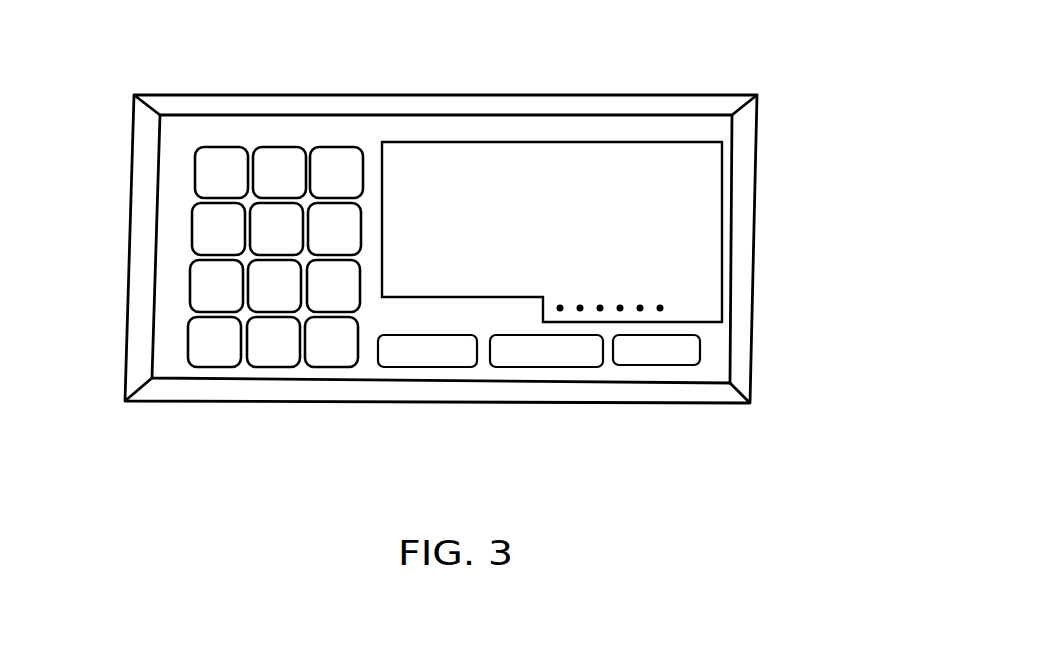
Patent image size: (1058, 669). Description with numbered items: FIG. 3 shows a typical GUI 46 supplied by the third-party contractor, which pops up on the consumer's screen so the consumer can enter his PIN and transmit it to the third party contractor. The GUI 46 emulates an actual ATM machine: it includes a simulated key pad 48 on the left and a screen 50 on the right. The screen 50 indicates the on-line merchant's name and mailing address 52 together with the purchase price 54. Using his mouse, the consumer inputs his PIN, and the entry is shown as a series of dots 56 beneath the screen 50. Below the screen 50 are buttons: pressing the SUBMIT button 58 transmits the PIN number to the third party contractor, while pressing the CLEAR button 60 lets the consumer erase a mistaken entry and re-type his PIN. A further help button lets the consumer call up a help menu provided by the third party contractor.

The GUI 46 is at (738, 62).
The simulated key pad 48 is at (190, 278).
The screen 50 is at (703, 182).
The on-line merchant's name and mailing address 52 is at (467, 152).
The purchase price 54 is at (510, 272).
The series of dots 56 is at (667, 303).
The SUBMIT button 58 is at (535, 367).
The CLEAR button 60 is at (432, 367).